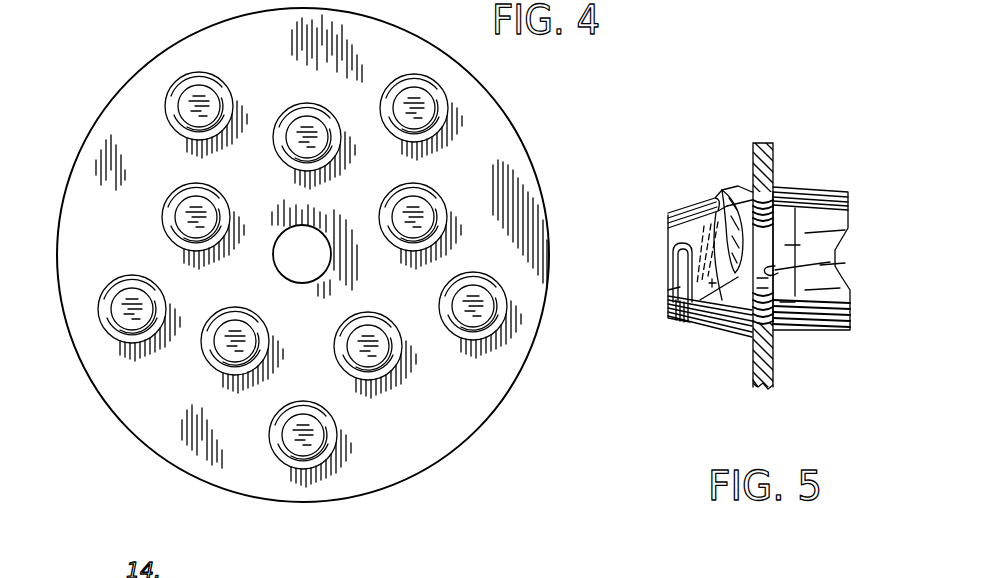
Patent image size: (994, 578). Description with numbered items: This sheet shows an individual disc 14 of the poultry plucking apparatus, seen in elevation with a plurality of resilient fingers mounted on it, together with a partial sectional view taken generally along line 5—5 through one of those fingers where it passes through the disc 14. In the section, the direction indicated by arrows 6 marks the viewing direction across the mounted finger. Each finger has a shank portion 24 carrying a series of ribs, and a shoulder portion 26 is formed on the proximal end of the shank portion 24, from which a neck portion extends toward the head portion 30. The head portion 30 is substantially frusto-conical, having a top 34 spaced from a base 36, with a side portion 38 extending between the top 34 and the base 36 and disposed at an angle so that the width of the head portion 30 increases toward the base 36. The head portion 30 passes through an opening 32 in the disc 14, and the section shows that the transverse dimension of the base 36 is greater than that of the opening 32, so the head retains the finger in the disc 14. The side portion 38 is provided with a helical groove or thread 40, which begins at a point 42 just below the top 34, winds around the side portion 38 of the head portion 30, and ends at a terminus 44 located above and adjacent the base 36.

In FIG. 4, the disc 14 is at (484, 185).
In FIG. 5, the disc 14 is at (776, 150).
In FIG. 4, the head portion 30 is at (376, 103).
In FIG. 5, the head portion 30 is at (682, 260).
In FIG. 4, the section line 5— 5 is at (132, 227).
In FIG. 5, the section line 6- 6 is at (773, 143).
In FIG. 5, the shank portion 24 is at (857, 238).
In FIG. 5, the shoulder portion 26 is at (836, 268).
In FIG. 5, the opening 32 is at (790, 201).
In FIG. 5, the top 34 is at (668, 289).
In FIG. 5, the base 36 is at (758, 198).
In FIG. 5, the side portion 38 is at (670, 212).
In FIG. 5, the helical thread 40 is at (690, 322).
In FIG. 5, the point just below top 42 is at (681, 249).
In FIG. 5, the terminus 44 is at (730, 316).